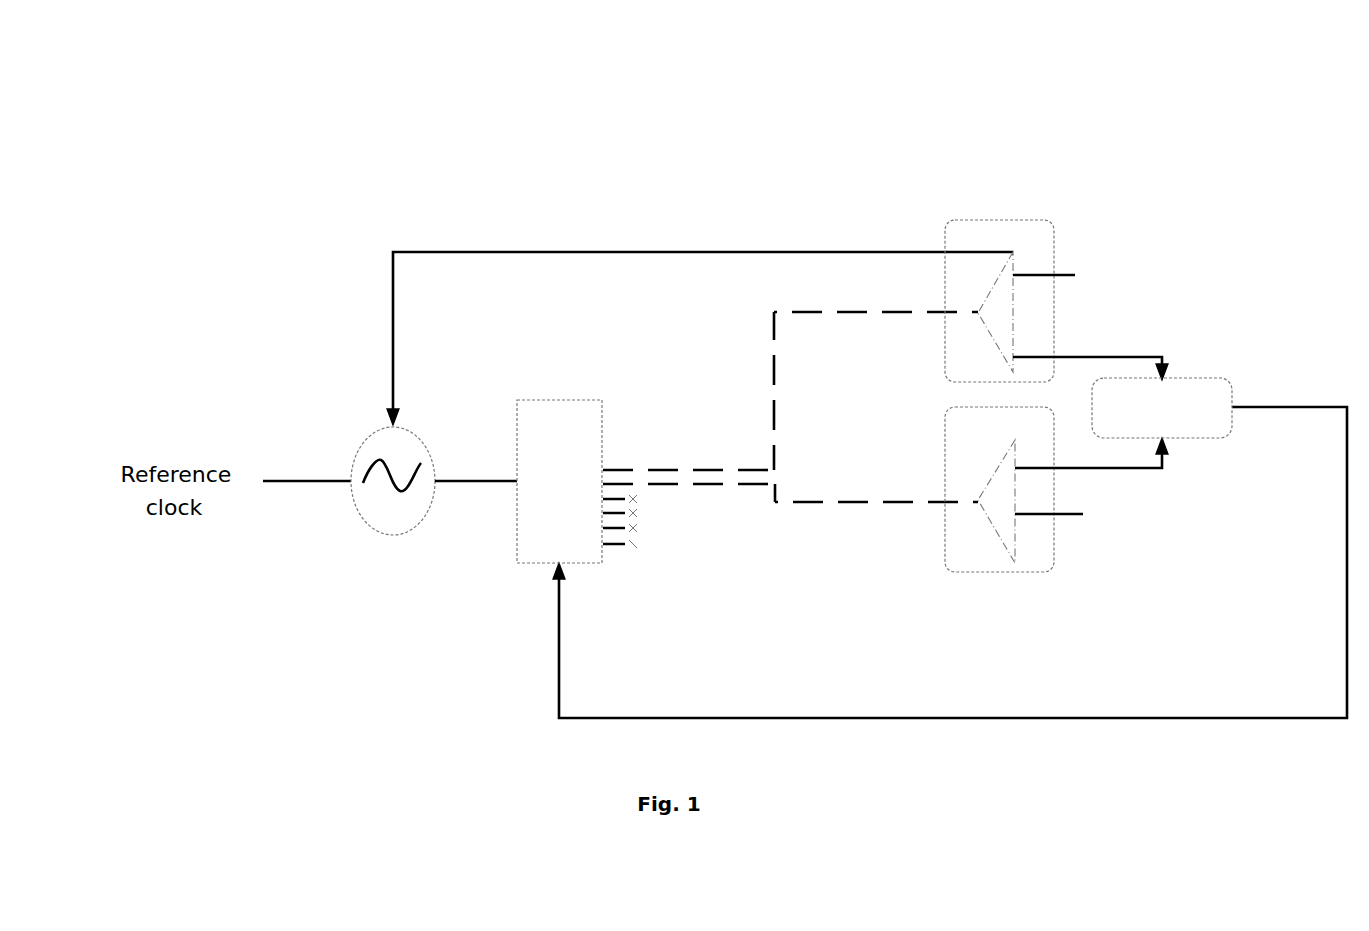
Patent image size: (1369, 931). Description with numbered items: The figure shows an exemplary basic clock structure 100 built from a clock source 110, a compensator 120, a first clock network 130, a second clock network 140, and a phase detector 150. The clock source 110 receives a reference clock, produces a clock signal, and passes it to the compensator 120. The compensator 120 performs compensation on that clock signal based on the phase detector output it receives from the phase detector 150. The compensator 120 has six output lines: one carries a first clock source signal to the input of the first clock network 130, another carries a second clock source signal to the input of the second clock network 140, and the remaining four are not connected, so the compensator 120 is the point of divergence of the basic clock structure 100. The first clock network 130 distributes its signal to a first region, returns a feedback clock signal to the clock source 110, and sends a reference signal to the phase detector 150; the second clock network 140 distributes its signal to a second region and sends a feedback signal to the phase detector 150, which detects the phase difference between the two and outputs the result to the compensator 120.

The basic clock structure 100 is at (284, 211).
The clock source 110 is at (397, 536).
The compensator 120 is at (558, 400).
The first clock network 130 is at (1050, 219).
The second clock network 140 is at (1052, 571).
The phase detector 150 is at (1232, 386).